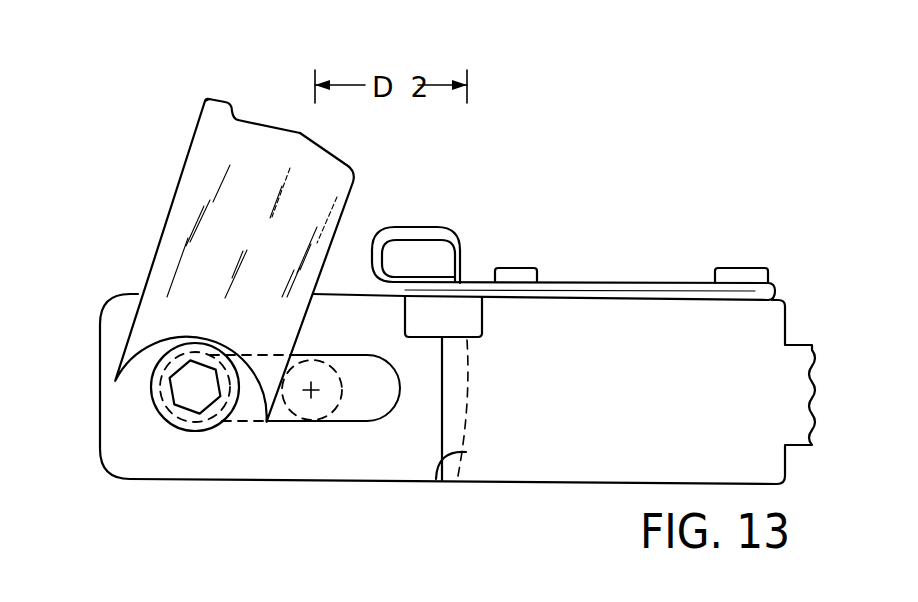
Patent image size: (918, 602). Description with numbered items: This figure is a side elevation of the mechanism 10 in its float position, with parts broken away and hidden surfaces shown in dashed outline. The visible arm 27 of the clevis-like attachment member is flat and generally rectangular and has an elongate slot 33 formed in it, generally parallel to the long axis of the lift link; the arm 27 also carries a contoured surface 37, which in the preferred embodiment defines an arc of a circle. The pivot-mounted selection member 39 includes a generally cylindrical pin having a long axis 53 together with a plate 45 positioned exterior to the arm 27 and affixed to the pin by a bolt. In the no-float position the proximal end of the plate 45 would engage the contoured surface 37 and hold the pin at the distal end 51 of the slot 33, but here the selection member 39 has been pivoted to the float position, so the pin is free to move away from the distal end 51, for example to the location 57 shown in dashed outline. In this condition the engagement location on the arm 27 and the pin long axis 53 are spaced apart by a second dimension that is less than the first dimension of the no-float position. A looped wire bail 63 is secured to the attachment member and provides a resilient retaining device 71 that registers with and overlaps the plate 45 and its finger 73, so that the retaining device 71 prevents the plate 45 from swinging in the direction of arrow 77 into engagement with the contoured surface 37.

The mechanism 10 is at (118, 218).
The second arm 27 is at (113, 469).
The first slot 33 is at (358, 414).
The contoured surface 37 is at (436, 481).
The selection member 39 is at (172, 89).
The second plate 45 is at (300, 133).
The distal end of slot 51 is at (162, 384).
The long axis of pin 53 is at (308, 393).
The location of pin in float position 57 is at (323, 414).
The looped wire bail 63 is at (610, 282).
The second resilient retaining device 71 is at (447, 230).
The finger 73 is at (220, 100).
The arrow 77 is at (148, 154).